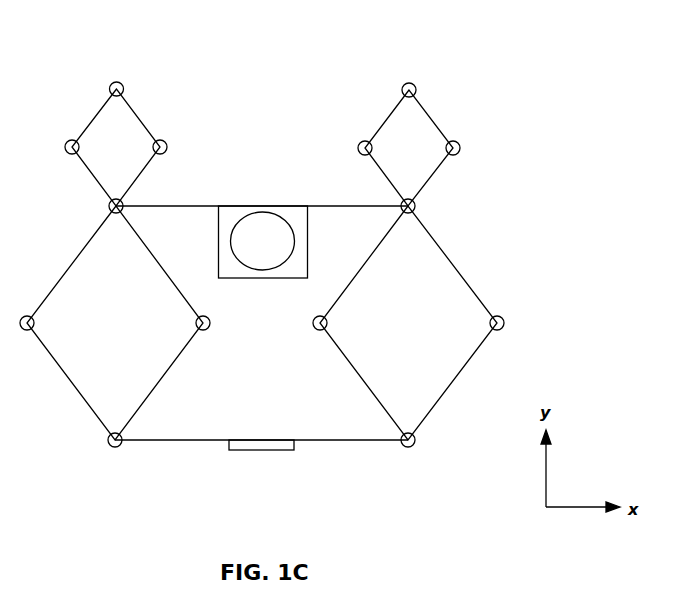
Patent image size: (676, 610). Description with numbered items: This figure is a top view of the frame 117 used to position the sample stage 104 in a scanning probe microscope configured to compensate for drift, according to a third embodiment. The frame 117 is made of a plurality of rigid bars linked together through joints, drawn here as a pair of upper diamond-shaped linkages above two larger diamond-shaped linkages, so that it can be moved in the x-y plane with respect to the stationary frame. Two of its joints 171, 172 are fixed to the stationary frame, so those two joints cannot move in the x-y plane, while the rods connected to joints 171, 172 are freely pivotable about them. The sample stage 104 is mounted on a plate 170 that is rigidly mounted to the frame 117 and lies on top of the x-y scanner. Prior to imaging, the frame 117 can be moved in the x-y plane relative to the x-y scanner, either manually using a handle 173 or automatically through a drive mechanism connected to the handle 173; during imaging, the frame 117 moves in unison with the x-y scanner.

The frame 117 is at (540, 66).
The plate 170 is at (233, 206).
The sample stage 104 is at (263, 241).
The joint 171 is at (110, 87).
The joint 172 is at (402, 87).
The handle 173 is at (296, 448).